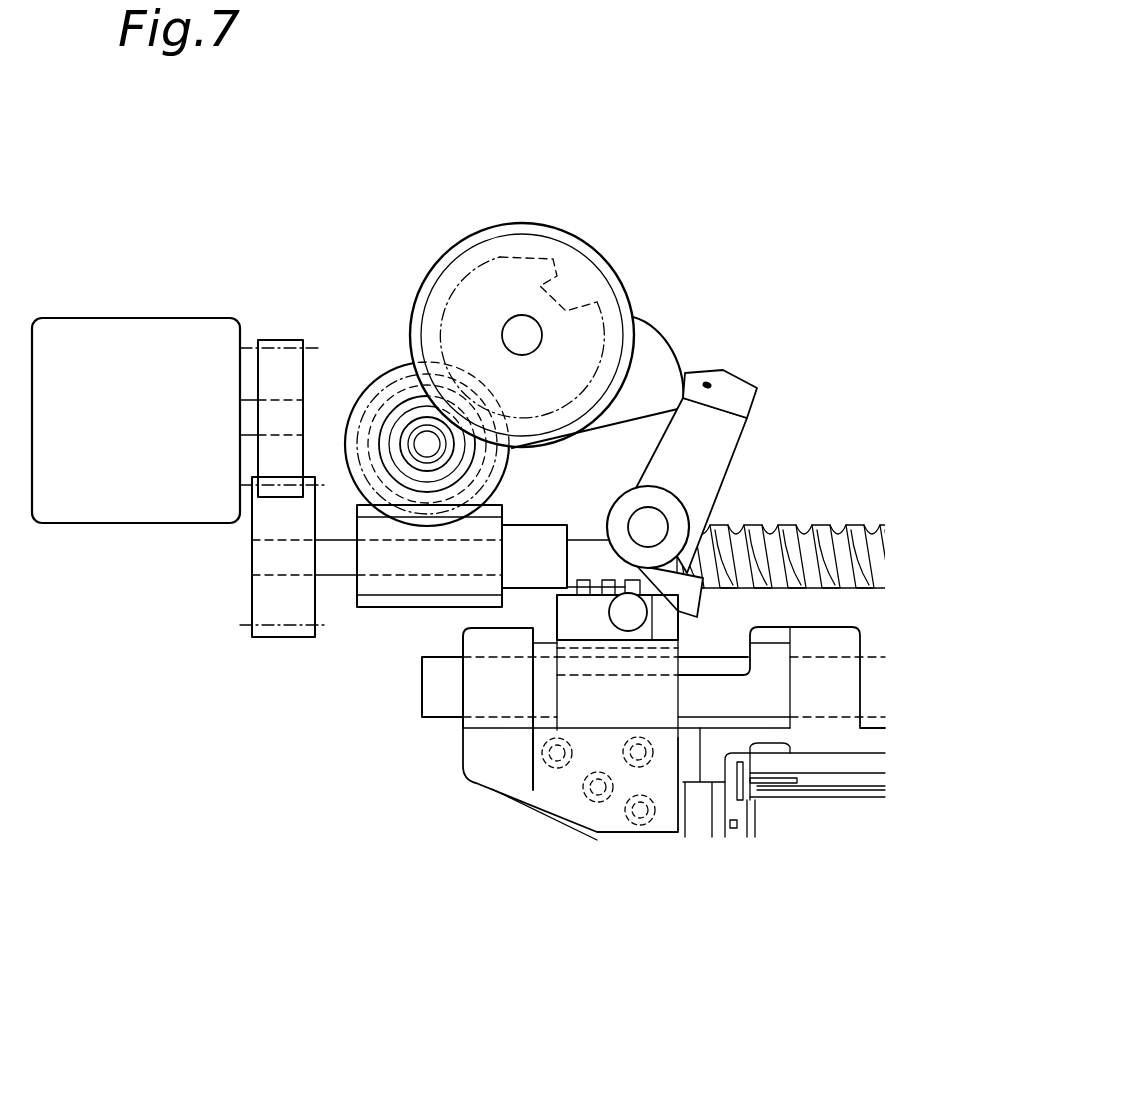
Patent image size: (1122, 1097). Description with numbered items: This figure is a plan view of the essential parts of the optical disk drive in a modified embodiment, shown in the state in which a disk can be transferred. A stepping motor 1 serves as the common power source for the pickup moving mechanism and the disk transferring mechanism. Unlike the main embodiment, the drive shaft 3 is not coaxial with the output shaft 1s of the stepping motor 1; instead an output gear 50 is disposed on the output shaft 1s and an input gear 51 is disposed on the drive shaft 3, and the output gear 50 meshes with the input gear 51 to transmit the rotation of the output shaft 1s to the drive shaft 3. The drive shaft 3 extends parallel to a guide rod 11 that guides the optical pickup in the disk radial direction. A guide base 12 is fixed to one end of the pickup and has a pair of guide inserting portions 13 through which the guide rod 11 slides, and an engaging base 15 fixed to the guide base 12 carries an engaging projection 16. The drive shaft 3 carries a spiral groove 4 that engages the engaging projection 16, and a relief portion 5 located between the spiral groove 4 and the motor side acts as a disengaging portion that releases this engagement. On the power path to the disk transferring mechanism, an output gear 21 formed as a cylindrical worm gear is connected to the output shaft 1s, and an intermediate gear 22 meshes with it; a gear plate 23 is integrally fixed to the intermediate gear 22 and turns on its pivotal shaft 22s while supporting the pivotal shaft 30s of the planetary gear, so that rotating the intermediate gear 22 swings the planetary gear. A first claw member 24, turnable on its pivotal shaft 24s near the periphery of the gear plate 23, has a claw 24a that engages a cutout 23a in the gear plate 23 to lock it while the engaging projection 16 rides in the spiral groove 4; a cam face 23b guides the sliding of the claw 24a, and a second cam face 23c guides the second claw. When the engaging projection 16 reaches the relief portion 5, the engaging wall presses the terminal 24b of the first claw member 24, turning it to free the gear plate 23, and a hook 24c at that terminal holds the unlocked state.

The stepping motor 1 is at (108, 523).
The output shaft 1s is at (248, 393).
The output gear 50 is at (284, 340).
The input gear 51 is at (281, 640).
The output gear 21 is at (393, 610).
The intermediate gear 22 is at (412, 397).
The pivotal shaft 22s is at (413, 440).
The gear plate 23 is at (668, 340).
The cutout 23a is at (560, 268).
The cam face 23b is at (679, 360).
The cam face 23c is at (502, 257).
The pivotal shaft 30s is at (508, 333).
The first claw member 24 is at (757, 405).
The claw 24a is at (694, 373).
The terminal 24b is at (622, 614).
The hook 24c is at (715, 555).
The pivotal shaft 24s is at (650, 513).
The drive shaft 3 is at (860, 524).
The spiral groove 4 is at (795, 556).
The relief portion 5 is at (567, 590).
The engaging projection 16 is at (578, 578).
The guide rod 11 is at (422, 693).
The guide base 12 is at (495, 770).
The guide inserting portions 13 is at (462, 702).
The engaging base 15 is at (563, 795).